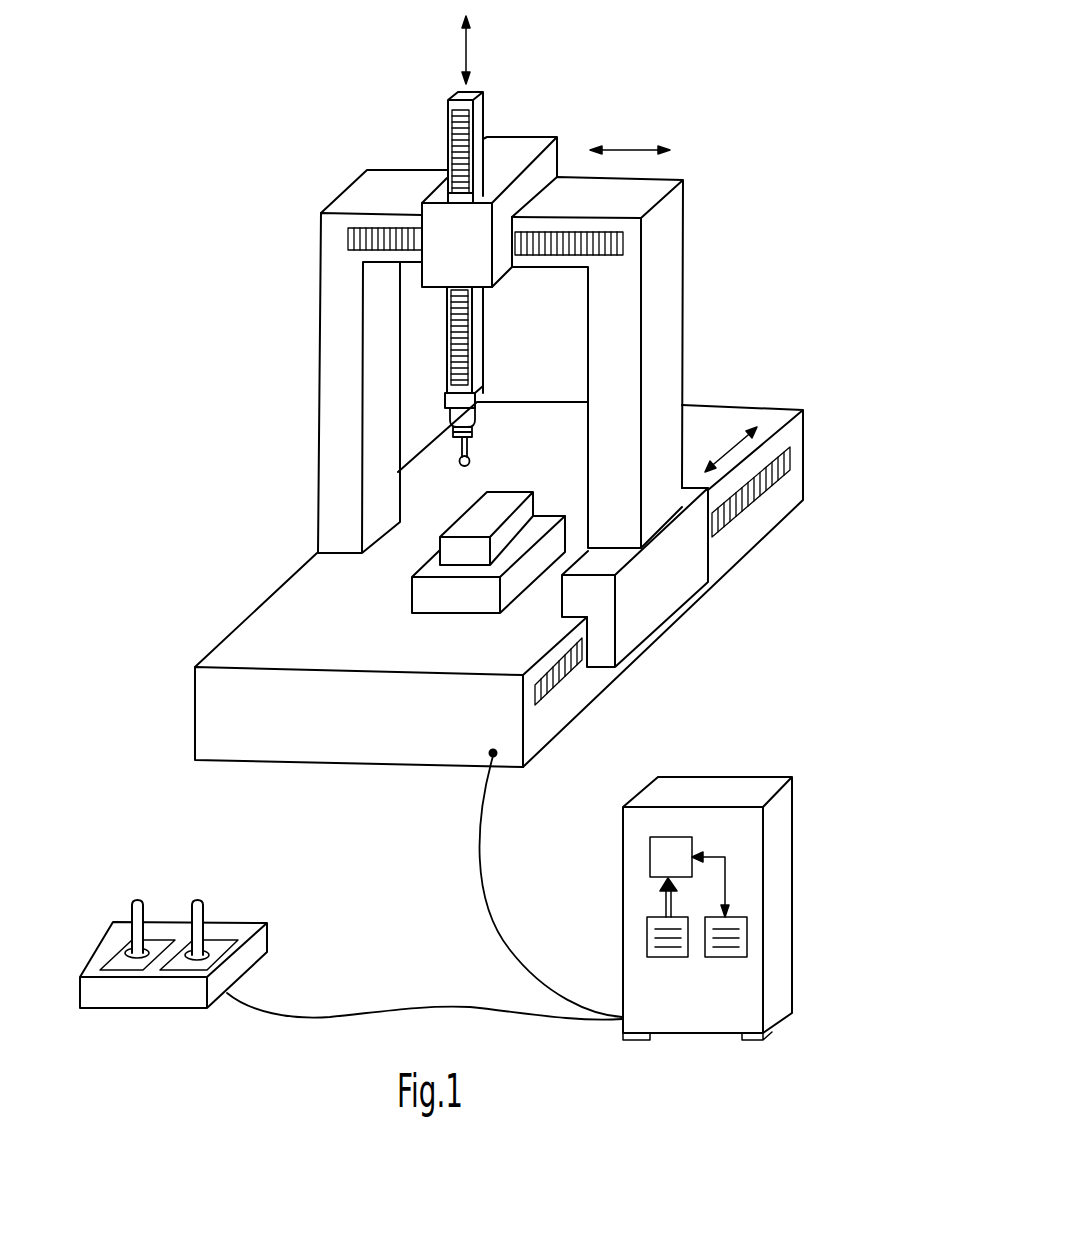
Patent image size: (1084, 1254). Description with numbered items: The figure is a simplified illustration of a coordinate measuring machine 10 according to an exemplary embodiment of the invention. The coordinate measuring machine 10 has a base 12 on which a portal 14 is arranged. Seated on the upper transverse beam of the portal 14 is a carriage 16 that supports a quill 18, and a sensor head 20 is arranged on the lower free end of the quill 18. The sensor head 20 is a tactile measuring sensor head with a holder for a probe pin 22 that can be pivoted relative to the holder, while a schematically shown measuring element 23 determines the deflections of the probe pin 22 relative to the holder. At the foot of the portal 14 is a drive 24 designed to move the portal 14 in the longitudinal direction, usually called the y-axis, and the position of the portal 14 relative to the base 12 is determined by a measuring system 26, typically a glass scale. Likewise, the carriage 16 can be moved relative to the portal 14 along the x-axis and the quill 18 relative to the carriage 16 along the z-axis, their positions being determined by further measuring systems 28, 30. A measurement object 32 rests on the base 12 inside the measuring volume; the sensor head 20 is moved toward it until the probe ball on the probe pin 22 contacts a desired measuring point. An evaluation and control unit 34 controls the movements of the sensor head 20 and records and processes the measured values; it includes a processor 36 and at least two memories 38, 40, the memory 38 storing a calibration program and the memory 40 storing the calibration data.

The coordinate measuring machine 10 is at (722, 153).
The base 12 is at (250, 657).
The portal 14 is at (342, 320).
The carriage 16 is at (440, 198).
The quill 18 is at (465, 92).
The sensor head 20 is at (468, 418).
The probe pin 22 is at (458, 452).
The measuring element 23 is at (472, 433).
The drive 24 is at (657, 607).
The measuring system 26 is at (752, 500).
The measuring system 28 is at (623, 238).
The measuring system 30 is at (480, 133).
The measurement object 32 is at (482, 518).
The evaluation and control unit 34 is at (705, 793).
The processor 36 is at (650, 862).
The memory 38 is at (670, 953).
The memory 40 is at (743, 942).